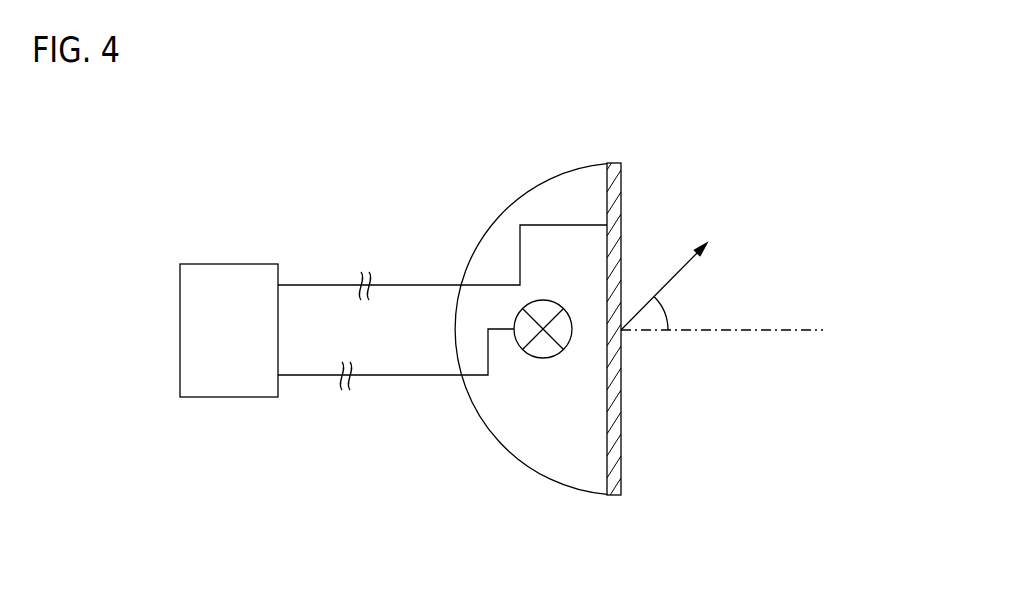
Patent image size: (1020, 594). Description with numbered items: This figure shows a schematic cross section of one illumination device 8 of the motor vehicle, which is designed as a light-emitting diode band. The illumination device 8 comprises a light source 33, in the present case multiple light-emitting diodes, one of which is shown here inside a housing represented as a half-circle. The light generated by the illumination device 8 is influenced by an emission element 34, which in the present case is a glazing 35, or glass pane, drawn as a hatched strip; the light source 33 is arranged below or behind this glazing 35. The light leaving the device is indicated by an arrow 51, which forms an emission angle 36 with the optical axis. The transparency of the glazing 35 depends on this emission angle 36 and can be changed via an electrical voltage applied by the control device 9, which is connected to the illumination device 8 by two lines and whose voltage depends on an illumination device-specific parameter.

The illumination device 8 is at (457, 456).
The control device 9 is at (245, 263).
The light source 33 is at (541, 358).
The emission element 34 is at (682, 324).
The glazing 35 is at (690, 440).
The emission angle 36 is at (667, 312).
The arrow 51 is at (675, 273).